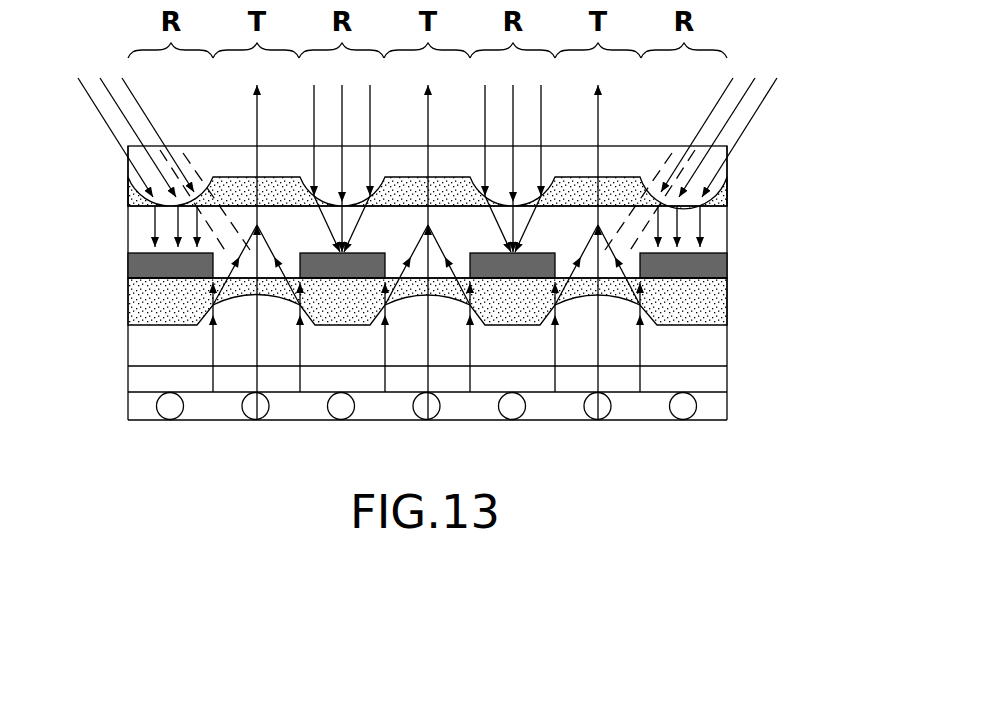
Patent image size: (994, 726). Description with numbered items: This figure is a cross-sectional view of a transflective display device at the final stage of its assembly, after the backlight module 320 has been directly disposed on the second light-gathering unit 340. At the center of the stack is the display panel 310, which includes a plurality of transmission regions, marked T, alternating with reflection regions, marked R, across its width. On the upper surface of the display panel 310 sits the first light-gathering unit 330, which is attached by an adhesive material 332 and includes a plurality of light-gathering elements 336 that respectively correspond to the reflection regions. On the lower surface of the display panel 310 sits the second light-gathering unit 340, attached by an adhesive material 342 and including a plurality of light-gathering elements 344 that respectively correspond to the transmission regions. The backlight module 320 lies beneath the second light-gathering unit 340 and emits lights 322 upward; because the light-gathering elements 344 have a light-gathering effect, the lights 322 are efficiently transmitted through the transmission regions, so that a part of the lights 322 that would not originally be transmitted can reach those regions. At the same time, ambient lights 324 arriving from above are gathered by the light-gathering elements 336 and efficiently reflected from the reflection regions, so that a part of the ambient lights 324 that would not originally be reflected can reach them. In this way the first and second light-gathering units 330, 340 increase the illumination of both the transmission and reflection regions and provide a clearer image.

The display panel 310 is at (727, 208).
The backlight module 320 is at (727, 367).
The lights 322 is at (257, 332).
The ambient lights 324 is at (108, 125).
The first light-gathering unit 330 is at (705, 169).
The adhesive material 332 is at (703, 200).
The light-gathering elements 336 is at (127, 207).
The second light-gathering unit 340 is at (698, 345).
The adhesive material 342 is at (163, 300).
The light-gathering elements 344 is at (232, 320).